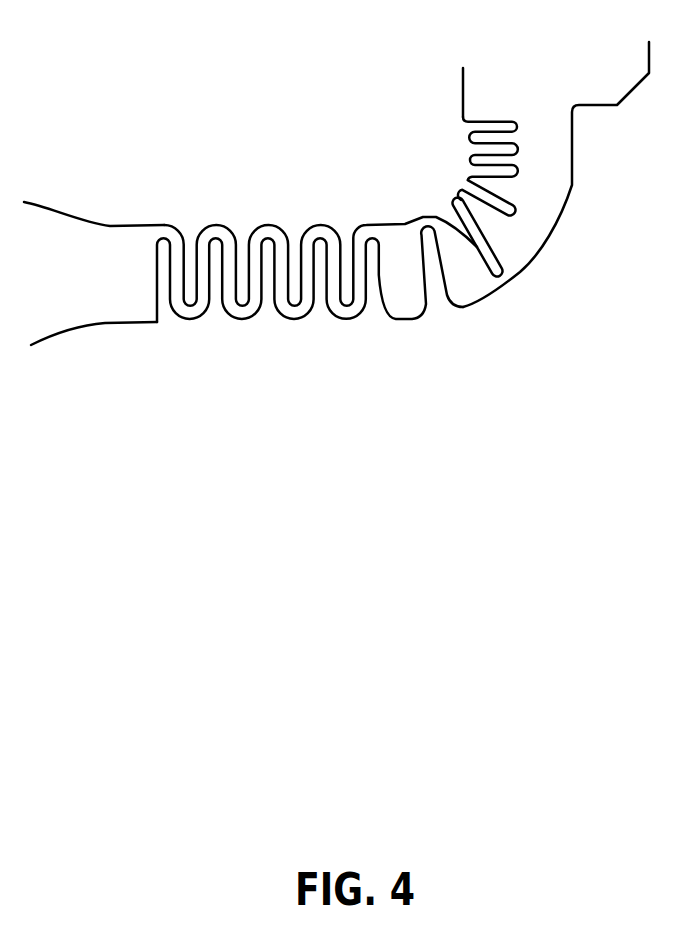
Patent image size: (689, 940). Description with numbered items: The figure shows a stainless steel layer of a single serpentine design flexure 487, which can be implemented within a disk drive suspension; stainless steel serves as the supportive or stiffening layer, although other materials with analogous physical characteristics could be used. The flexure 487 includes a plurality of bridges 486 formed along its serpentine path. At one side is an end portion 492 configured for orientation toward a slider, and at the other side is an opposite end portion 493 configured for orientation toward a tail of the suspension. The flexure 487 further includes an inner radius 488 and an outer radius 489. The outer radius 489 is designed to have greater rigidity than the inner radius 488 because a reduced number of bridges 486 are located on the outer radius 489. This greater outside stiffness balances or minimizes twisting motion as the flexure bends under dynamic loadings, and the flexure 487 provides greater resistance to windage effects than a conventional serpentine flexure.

The bridges 486 is at (480, 149).
The single serpentine design flexure 487 is at (249, 44).
The inner radius 488 is at (395, 223).
The outer radius 489 is at (550, 213).
The end portion 492 is at (125, 284).
The opposite end portion 493 is at (550, 96).